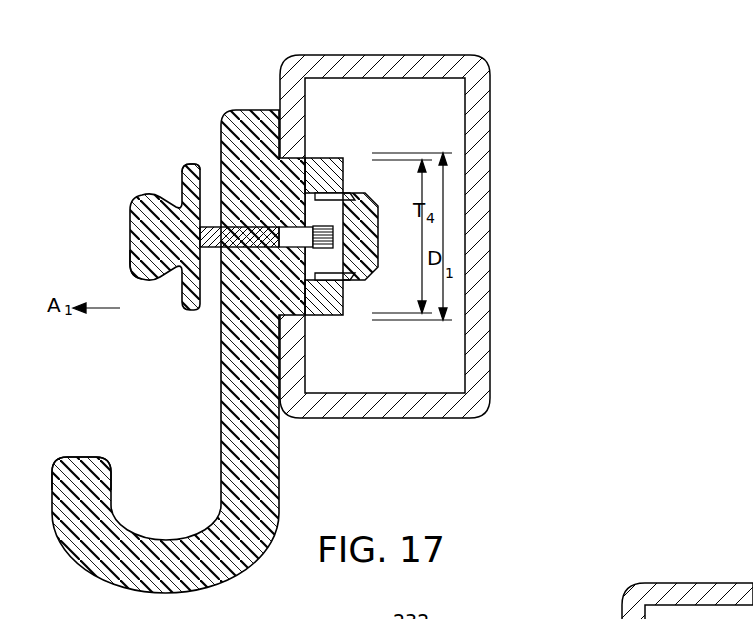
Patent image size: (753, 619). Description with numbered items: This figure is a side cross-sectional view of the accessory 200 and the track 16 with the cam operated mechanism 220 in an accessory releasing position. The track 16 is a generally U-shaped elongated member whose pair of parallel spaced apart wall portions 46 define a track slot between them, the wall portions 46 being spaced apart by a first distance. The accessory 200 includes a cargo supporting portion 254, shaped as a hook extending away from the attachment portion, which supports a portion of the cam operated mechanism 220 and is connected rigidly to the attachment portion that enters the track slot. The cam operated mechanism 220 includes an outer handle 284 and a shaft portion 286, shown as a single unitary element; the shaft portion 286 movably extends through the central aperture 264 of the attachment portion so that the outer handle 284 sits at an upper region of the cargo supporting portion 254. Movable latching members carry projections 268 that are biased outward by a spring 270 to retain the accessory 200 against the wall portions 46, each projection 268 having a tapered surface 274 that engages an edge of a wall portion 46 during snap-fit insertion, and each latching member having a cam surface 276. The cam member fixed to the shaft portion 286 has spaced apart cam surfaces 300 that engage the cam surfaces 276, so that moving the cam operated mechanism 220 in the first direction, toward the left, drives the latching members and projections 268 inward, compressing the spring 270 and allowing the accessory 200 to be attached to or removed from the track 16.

The track 16 is at (417, 236).
The wall portions 46 is at (290, 118).
The accessory 200 is at (171, 338).
The cam operated mechanism 220 is at (166, 225).
The cargo supporting portion 254 is at (80, 475).
The central aperture 264 is at (215, 252).
The projections 268 is at (345, 239).
The spring 270 is at (362, 232).
The tapered surface 274 is at (328, 163).
The cam surface 276 is at (345, 197).
The outer handle 284 is at (129, 222).
The shaft portion 286 is at (222, 163).
The cam surfaces 300 is at (178, 338).